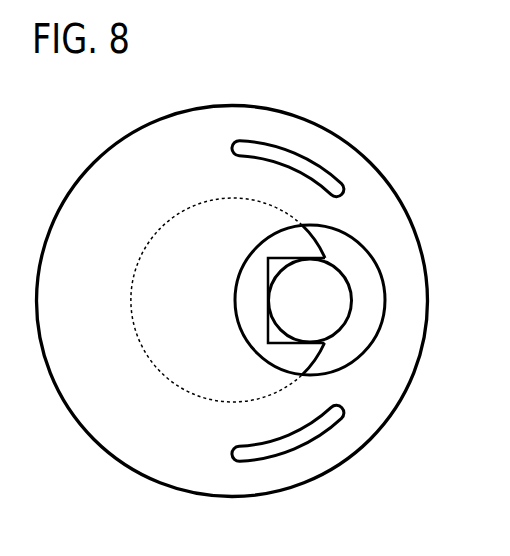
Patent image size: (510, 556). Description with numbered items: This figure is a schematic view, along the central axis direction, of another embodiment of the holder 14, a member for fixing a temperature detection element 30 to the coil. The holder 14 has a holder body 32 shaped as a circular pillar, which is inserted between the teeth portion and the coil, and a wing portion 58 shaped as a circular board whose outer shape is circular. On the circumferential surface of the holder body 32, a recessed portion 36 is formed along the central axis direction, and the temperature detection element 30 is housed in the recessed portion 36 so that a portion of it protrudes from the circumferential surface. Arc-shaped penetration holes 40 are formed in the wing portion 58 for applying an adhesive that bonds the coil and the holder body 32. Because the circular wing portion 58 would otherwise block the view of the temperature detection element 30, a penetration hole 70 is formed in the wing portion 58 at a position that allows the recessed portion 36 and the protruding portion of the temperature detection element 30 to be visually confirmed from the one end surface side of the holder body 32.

The holder 14 is at (407, 128).
The wing portion 58 is at (88, 197).
The penetration hole 40 is at (286, 155).
The recessed portion 36 is at (277, 262).
The temperature detection element 30 is at (350, 284).
The penetration hole 70 is at (392, 300).
The holder body 32 is at (303, 353).